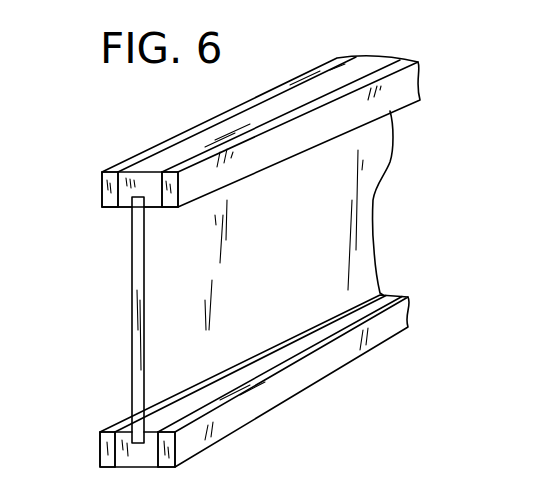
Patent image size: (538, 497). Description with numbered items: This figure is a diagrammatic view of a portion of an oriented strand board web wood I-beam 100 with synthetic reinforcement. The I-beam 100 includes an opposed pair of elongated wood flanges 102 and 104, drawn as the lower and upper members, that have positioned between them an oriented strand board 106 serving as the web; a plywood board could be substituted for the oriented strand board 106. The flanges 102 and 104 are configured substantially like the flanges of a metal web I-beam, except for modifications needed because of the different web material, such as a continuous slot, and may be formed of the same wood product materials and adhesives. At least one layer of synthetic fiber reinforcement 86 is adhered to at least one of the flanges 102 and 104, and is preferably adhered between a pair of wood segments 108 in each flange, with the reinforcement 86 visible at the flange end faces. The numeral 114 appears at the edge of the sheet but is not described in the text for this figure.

The oriented strand board web wood I-beam 100 is at (257, 249).
The elongated wood flange 102 is at (415, 333).
The elongated wood flange 104 is at (352, 58).
The oriented strand board 106 is at (290, 270).
The wood segments 108 is at (303, 117).
The synthetic fiber reinforcement 86 is at (115, 207).
The base member 114 is at (436, 487).